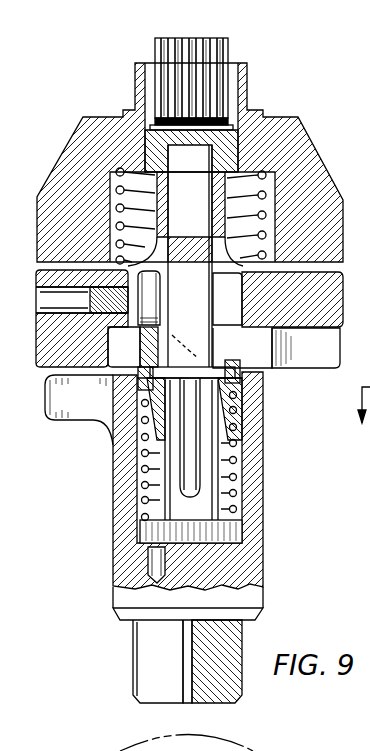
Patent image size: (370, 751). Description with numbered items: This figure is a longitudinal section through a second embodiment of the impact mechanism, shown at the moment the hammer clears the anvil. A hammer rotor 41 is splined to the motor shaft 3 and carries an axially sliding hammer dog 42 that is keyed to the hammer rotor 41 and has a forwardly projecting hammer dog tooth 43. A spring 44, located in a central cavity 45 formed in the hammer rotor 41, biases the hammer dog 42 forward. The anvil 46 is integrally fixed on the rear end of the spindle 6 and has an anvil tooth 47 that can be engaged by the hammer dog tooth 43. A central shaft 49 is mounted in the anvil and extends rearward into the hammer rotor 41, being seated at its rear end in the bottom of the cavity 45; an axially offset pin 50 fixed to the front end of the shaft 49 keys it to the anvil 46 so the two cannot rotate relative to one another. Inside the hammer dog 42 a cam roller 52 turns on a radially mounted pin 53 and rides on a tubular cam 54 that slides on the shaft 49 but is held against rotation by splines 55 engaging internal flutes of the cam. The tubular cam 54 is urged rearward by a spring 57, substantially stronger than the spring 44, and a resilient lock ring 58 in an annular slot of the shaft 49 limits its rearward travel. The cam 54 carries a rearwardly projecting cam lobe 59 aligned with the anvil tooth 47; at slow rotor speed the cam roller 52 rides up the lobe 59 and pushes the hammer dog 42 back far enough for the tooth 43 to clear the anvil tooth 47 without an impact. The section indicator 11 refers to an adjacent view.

The motor shaft 3 is at (213, 47).
The hammer rotor 41 is at (292, 119).
The hammer dog 42 is at (327, 300).
The hammer dog tooth 43 is at (52, 352).
The spring 44 is at (264, 226).
The central cavity 45 is at (264, 186).
The anvil 46 is at (256, 431).
The anvil tooth 47 is at (95, 412).
The central shaft 49 is at (197, 305).
The offset pin 50 is at (155, 561).
The cam roller 52 is at (153, 312).
The radially mounted pin 53 is at (97, 295).
The tubular cam 54 is at (242, 362).
The splines 55 is at (173, 476).
The spring 57 is at (233, 493).
The resilient lock ring 58 is at (208, 368).
The cam lobe 59 is at (133, 347).
The spindle 6 is at (271, 566).
The section line 11 is at (361, 439).